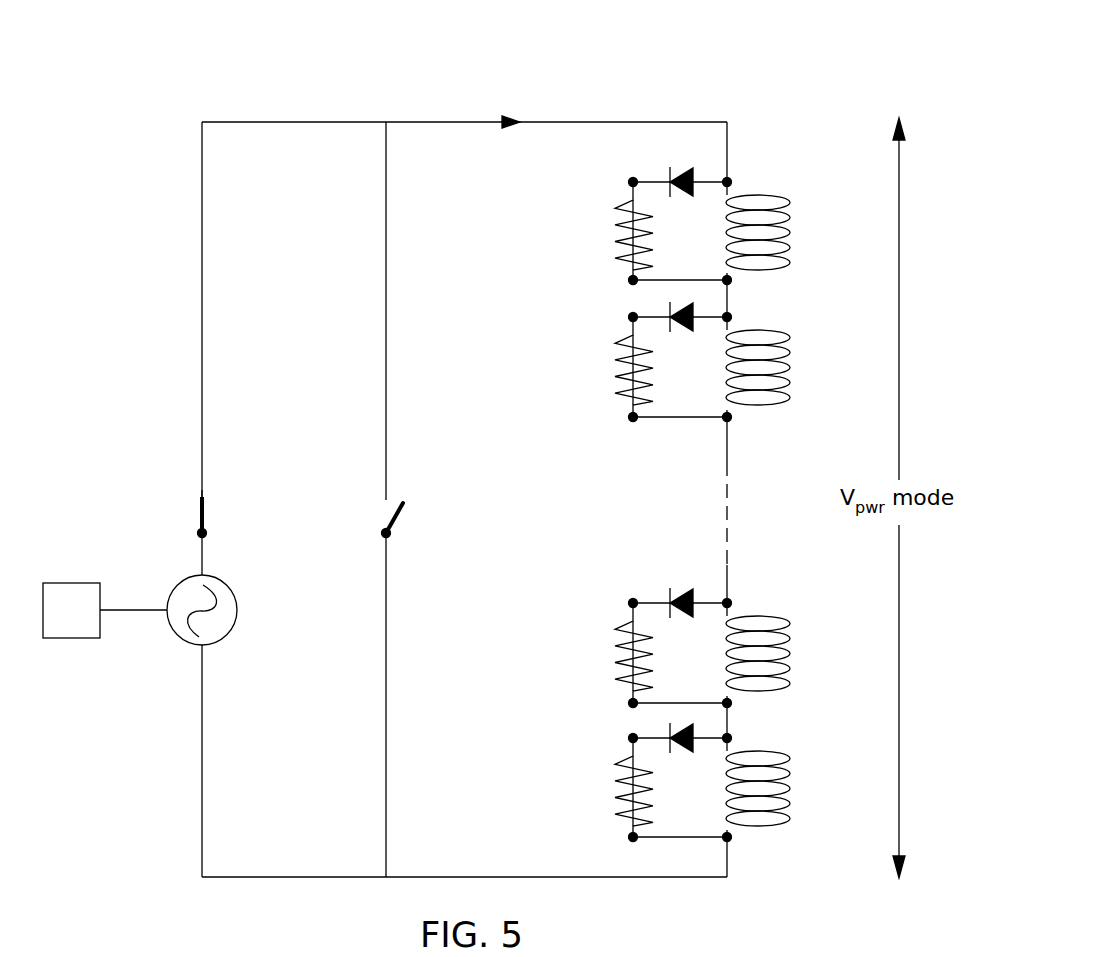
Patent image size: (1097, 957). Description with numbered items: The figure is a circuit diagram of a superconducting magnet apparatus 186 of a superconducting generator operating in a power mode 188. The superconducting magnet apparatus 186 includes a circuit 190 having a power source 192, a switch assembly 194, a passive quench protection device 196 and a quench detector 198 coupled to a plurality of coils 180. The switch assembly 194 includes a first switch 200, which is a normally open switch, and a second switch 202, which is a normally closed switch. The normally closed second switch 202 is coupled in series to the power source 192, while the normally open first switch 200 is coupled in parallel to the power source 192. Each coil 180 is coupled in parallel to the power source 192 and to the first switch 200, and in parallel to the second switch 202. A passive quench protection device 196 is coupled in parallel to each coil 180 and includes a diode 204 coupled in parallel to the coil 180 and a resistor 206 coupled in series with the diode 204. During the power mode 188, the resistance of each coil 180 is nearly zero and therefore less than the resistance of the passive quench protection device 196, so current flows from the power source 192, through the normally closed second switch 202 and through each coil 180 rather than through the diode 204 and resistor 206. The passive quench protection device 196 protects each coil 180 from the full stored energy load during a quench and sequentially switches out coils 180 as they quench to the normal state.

The superconducting magnet apparatus 186 is at (302, 56).
The circuit 190 is at (202, 174).
The switch assembly 194 is at (280, 384).
The power mode 188 is at (190, 489).
The second switch 202 is at (204, 515).
The first switch 200 is at (397, 518).
The power source 192 is at (185, 644).
The quench detector 198 is at (75, 583).
The diode 204 is at (695, 165).
The resistor 206 is at (618, 205).
The coil 180 is at (764, 199).
The passive quench protection device 196 is at (592, 250).